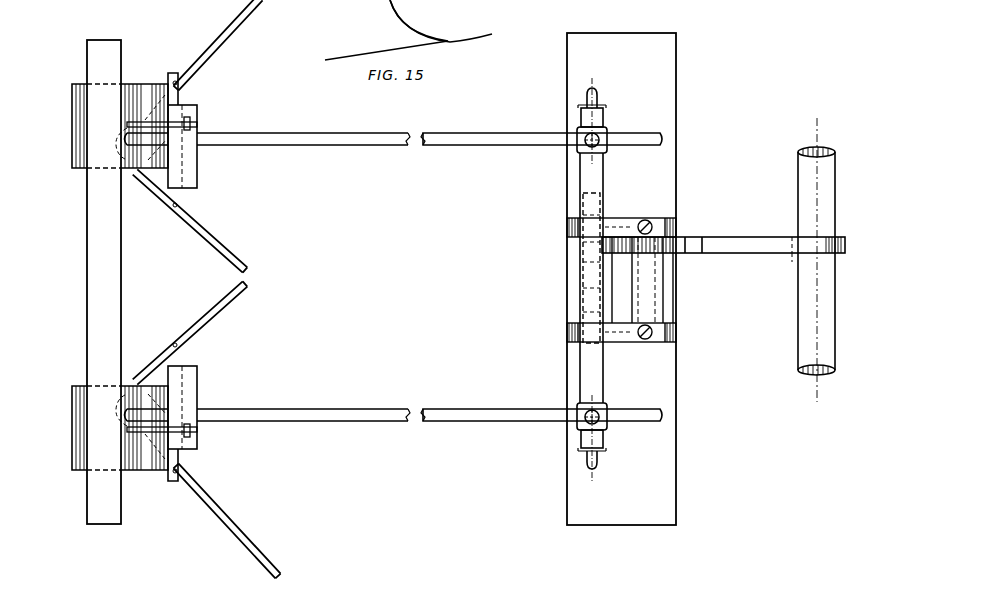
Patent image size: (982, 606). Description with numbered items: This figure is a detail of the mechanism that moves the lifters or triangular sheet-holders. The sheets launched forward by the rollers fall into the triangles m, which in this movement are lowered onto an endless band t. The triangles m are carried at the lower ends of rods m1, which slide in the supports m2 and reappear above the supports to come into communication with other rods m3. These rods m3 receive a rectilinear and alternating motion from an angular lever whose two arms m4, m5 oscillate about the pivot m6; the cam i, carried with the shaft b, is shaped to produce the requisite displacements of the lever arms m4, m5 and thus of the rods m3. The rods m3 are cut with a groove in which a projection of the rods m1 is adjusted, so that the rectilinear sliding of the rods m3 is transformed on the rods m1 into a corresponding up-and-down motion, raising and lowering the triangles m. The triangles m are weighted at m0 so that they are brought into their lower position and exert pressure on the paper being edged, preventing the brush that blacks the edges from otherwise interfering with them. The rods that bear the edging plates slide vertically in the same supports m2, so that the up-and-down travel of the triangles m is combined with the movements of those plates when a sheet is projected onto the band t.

The triangles m is at (207, 289).
The weight m0 is at (101, 277).
The rods m1 is at (190, 121).
The supports m2 is at (161, 280).
The rods m3 is at (394, 267).
The angular lever arm m4 is at (601, 280).
The angular lever arm m5 is at (723, 237).
The pivot m6 is at (610, 268).
The shaft b is at (816, 260).
The cam i is at (787, 264).
The endless band t is at (408, 30).